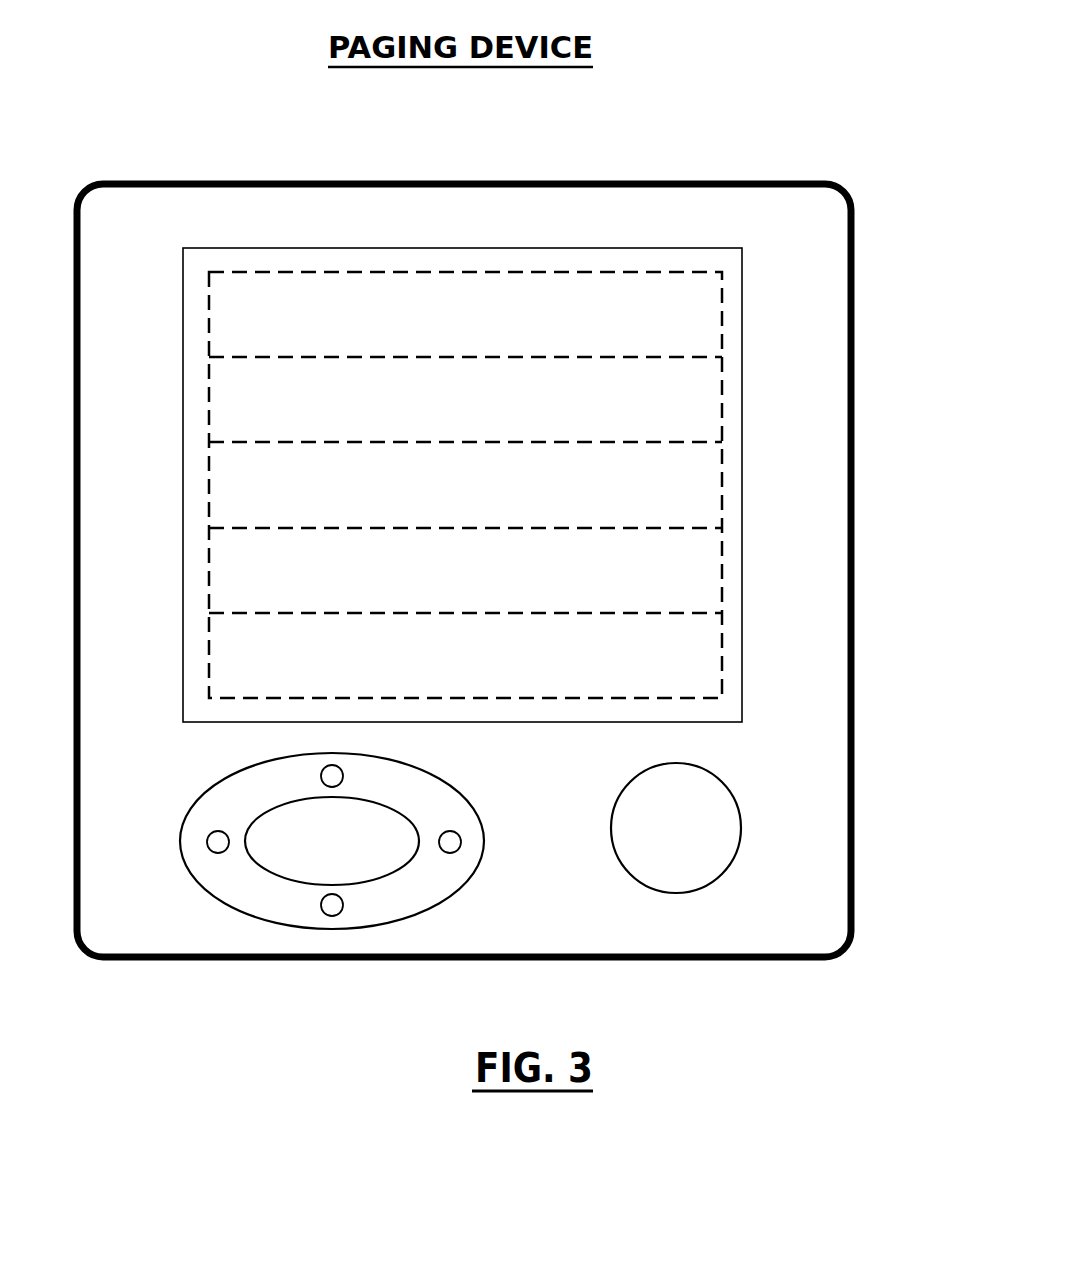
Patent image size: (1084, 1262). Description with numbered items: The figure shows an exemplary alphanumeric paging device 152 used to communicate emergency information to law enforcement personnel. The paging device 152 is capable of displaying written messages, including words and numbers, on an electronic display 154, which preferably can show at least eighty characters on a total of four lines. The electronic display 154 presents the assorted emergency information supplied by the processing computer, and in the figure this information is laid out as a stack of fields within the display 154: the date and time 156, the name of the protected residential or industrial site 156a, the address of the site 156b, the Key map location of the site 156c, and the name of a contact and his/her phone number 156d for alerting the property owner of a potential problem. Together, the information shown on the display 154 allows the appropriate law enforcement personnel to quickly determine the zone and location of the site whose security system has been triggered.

The alphanumeric paging device 152 is at (767, 179).
The electronic display 154 is at (182, 421).
The date and time 156 is at (722, 302).
The name of the protected residential or industrial site 156a is at (722, 387).
The address of the site 156b is at (722, 472).
The Key map location of the site 156c is at (722, 557).
The name of a contact and his/her phone number 156d is at (722, 645).